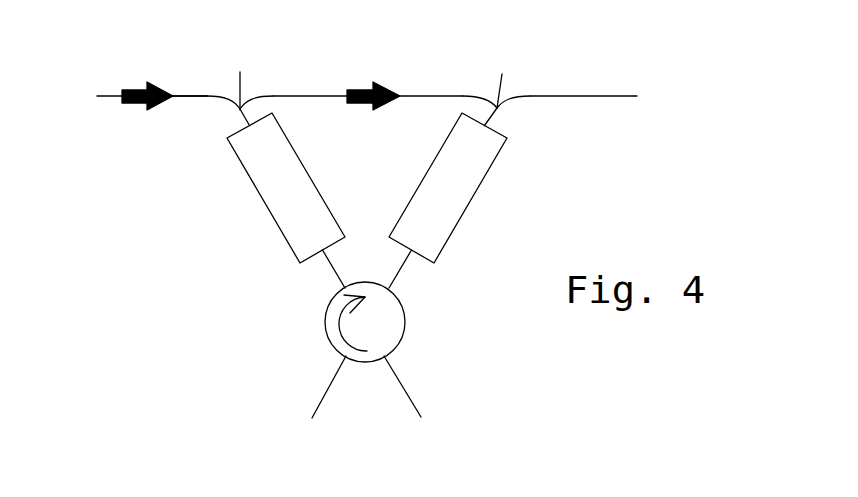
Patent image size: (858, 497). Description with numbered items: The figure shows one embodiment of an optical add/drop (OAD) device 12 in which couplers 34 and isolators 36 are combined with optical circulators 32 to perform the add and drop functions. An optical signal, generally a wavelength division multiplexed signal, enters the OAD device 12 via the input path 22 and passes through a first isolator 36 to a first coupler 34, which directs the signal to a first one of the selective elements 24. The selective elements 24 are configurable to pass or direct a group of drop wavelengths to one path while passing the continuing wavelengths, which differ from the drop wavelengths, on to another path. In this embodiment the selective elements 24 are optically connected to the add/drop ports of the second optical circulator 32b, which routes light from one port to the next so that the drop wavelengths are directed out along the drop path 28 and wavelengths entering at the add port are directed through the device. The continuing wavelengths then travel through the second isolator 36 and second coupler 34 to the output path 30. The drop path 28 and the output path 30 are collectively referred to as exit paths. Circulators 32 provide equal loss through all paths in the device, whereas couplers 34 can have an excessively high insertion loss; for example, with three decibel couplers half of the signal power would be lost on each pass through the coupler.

The OAD device 12 is at (771, 108).
The input path 22 is at (105, 96).
The selective elements 24 is at (508, 207).
The drop path 28 is at (410, 400).
The output path 30 is at (607, 96).
The optical circulators 32 is at (323, 400).
The second optical circulator 32b is at (405, 322).
The couplers 34 is at (368, 77).
The optical isolators 36 is at (138, 90).